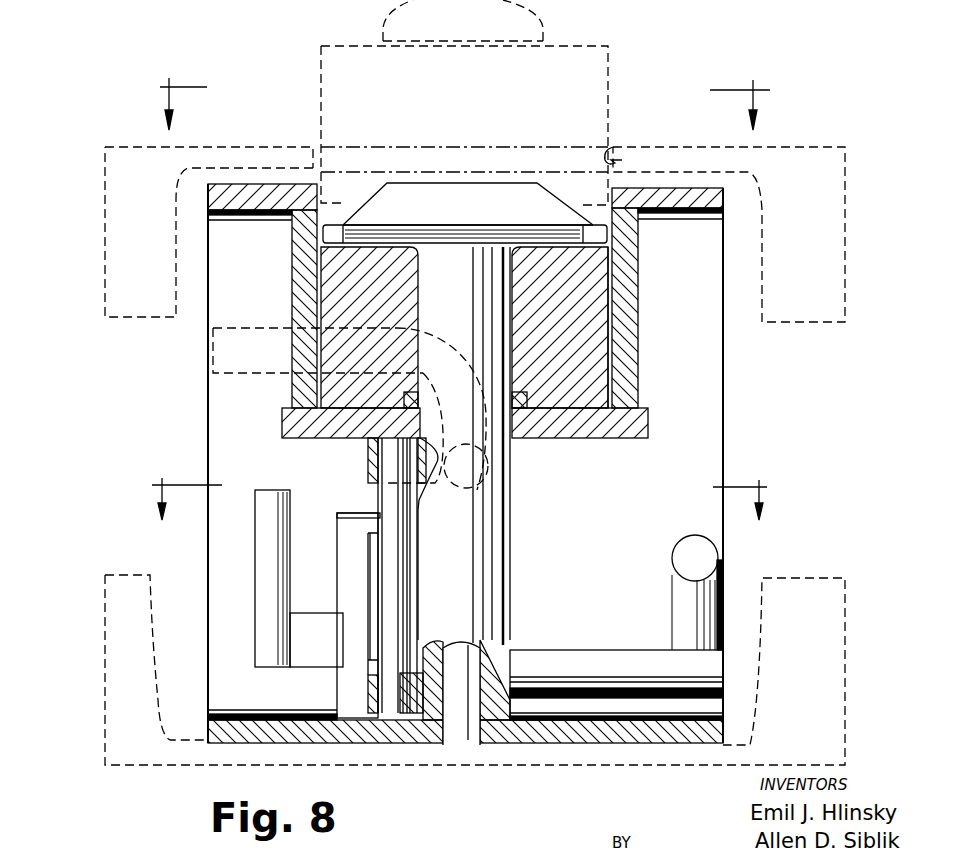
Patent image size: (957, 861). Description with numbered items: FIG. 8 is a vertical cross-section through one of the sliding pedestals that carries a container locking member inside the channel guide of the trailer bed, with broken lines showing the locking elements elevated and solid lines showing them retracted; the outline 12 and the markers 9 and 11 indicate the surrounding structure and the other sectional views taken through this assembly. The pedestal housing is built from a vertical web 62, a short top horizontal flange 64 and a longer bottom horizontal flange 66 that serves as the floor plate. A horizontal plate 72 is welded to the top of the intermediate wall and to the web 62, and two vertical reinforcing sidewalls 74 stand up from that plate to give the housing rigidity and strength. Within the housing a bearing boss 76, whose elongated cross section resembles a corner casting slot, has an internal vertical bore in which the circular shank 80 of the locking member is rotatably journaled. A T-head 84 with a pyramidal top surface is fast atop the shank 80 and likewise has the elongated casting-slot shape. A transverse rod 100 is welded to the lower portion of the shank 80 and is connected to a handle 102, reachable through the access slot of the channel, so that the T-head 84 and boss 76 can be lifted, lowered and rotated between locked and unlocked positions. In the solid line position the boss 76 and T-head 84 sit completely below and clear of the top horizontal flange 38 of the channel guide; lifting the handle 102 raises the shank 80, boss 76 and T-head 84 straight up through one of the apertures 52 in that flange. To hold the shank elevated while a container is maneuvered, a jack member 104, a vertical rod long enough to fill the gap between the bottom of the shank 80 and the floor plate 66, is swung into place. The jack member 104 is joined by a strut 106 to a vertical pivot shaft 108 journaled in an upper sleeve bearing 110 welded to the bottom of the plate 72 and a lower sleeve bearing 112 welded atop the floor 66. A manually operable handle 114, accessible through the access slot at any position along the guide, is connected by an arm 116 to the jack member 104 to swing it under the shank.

The housing outline 12 is at (773, 742).
The top horizontal flange 38 is at (478, 162).
The aperture 52 is at (615, 147).
The vertical web 62 is at (562, 529).
The top horizontal flange 64 is at (212, 198).
The bottom horizontal flange 66 is at (273, 720).
The horizontal plate 72 is at (614, 438).
The vertical reinforcing sidewall 74 is at (292, 285).
The bearing boss 76 is at (598, 345).
The shank 80 is at (462, 294).
The T-head 84 is at (323, 236).
The transverse rod 100 is at (622, 657).
The handle 102 is at (680, 548).
The jack member 104 is at (340, 556).
The strut 106 is at (375, 605).
The vertical pivot shaft 108 is at (407, 533).
The upper sleeve bearing 110 is at (368, 470).
The lower sleeve bearing 112 is at (370, 700).
The handle 114 is at (258, 580).
The arm 116 is at (330, 645).
The section line 9- 9 is at (463, 510).
The section line 11- 11 is at (471, 111).